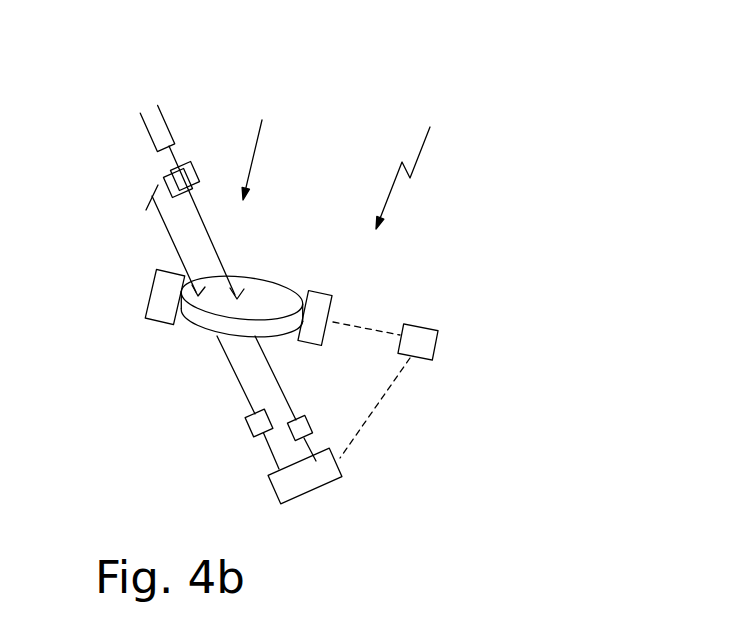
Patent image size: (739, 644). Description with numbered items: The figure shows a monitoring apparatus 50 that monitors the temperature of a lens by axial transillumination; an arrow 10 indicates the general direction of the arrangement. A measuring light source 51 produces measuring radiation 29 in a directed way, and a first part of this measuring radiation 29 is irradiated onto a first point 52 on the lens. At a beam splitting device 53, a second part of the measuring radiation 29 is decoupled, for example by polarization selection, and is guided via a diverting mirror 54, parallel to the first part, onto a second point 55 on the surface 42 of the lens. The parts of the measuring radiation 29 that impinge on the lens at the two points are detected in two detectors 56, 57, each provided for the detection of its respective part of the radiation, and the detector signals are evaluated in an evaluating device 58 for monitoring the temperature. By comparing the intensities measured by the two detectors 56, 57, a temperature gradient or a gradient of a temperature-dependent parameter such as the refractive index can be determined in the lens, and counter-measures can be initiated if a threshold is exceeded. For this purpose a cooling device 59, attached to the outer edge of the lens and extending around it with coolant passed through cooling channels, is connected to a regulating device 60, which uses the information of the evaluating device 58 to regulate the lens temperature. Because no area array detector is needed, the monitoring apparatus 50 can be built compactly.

The measuring device 10 is at (255, 148).
The measuring radiation 29 is at (172, 166).
The surface 42 is at (270, 300).
The monitoring apparatus 50 is at (408, 165).
The measuring light source 51 is at (153, 120).
The first point 52 is at (240, 292).
The beam splitting device 53 is at (196, 173).
The diverting mirror 54 is at (152, 197).
The second point 55 is at (200, 292).
The detector 56 is at (250, 423).
The detector 57 is at (303, 425).
The evaluating device 58 is at (310, 482).
The cooling device 59 is at (325, 302).
The regulating device 60 is at (420, 352).